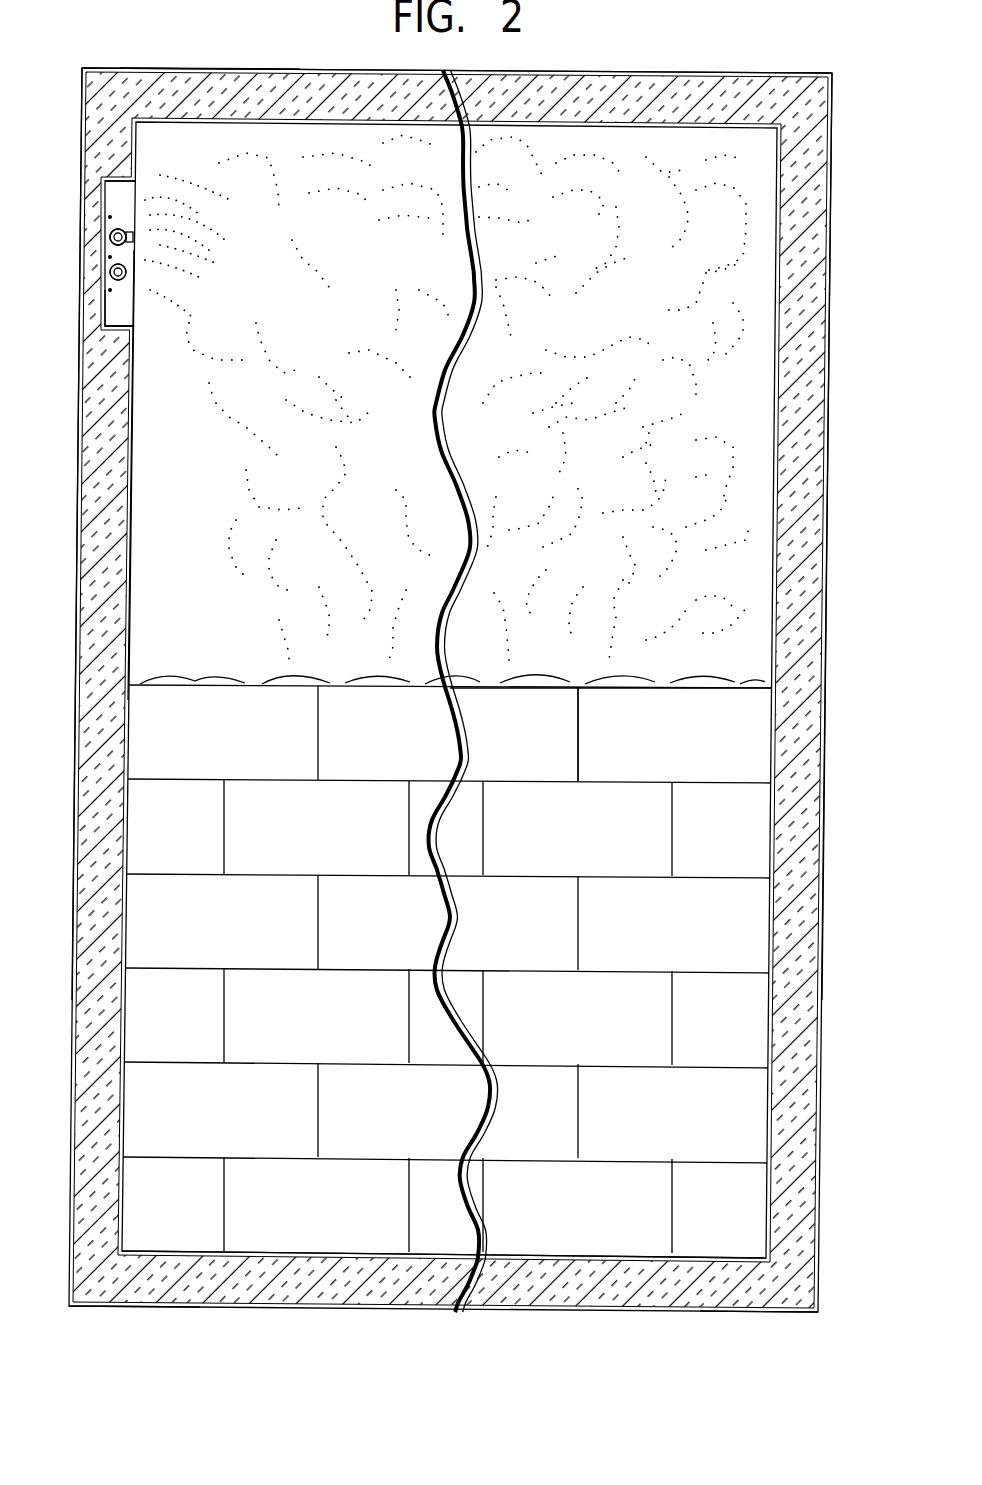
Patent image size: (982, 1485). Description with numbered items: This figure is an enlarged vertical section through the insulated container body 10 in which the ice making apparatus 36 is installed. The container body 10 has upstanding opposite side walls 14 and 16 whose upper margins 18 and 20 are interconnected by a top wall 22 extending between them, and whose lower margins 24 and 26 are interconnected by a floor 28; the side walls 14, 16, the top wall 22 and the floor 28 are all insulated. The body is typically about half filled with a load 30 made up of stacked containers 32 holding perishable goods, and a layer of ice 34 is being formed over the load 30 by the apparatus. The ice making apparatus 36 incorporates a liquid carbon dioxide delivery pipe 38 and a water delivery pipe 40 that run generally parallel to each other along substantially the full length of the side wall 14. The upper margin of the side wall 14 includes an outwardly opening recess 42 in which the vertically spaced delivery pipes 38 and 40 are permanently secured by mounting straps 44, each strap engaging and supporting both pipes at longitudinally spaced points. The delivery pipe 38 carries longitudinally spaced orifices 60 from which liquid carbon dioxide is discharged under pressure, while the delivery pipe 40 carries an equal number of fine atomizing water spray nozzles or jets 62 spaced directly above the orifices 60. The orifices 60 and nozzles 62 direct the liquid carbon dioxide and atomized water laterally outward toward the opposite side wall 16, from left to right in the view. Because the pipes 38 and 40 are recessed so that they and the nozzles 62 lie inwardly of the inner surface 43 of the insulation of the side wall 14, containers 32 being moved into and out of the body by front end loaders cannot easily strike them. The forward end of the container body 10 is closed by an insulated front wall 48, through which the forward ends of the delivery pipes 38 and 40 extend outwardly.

The container body 10 is at (652, 70).
The side wall 14 is at (82, 478).
The side wall 16 is at (834, 470).
The upper margin 18 is at (82, 178).
The upper margin 20 is at (836, 157).
The top wall 22 is at (167, 68).
The lower margin 24 is at (72, 1260).
The lower margin 26 is at (820, 1255).
The floor 28 is at (270, 1255).
The load 30 is at (540, 712).
The stacked containers 32 is at (587, 843).
The layer of ice 34 is at (278, 681).
The ice making apparatus 36 is at (140, 232).
The liquid CO2 delivery pipe 38 is at (124, 282).
The water delivery pipe 40 is at (110, 233).
The outwardly opening recess 42 is at (110, 190).
The inner surface 43 is at (134, 474).
The mounting straps 44 is at (117, 300).
The insulated front wall 48 is at (412, 458).
The orifices 60 is at (128, 275).
The atomizing water spray nozzles 62 is at (130, 238).